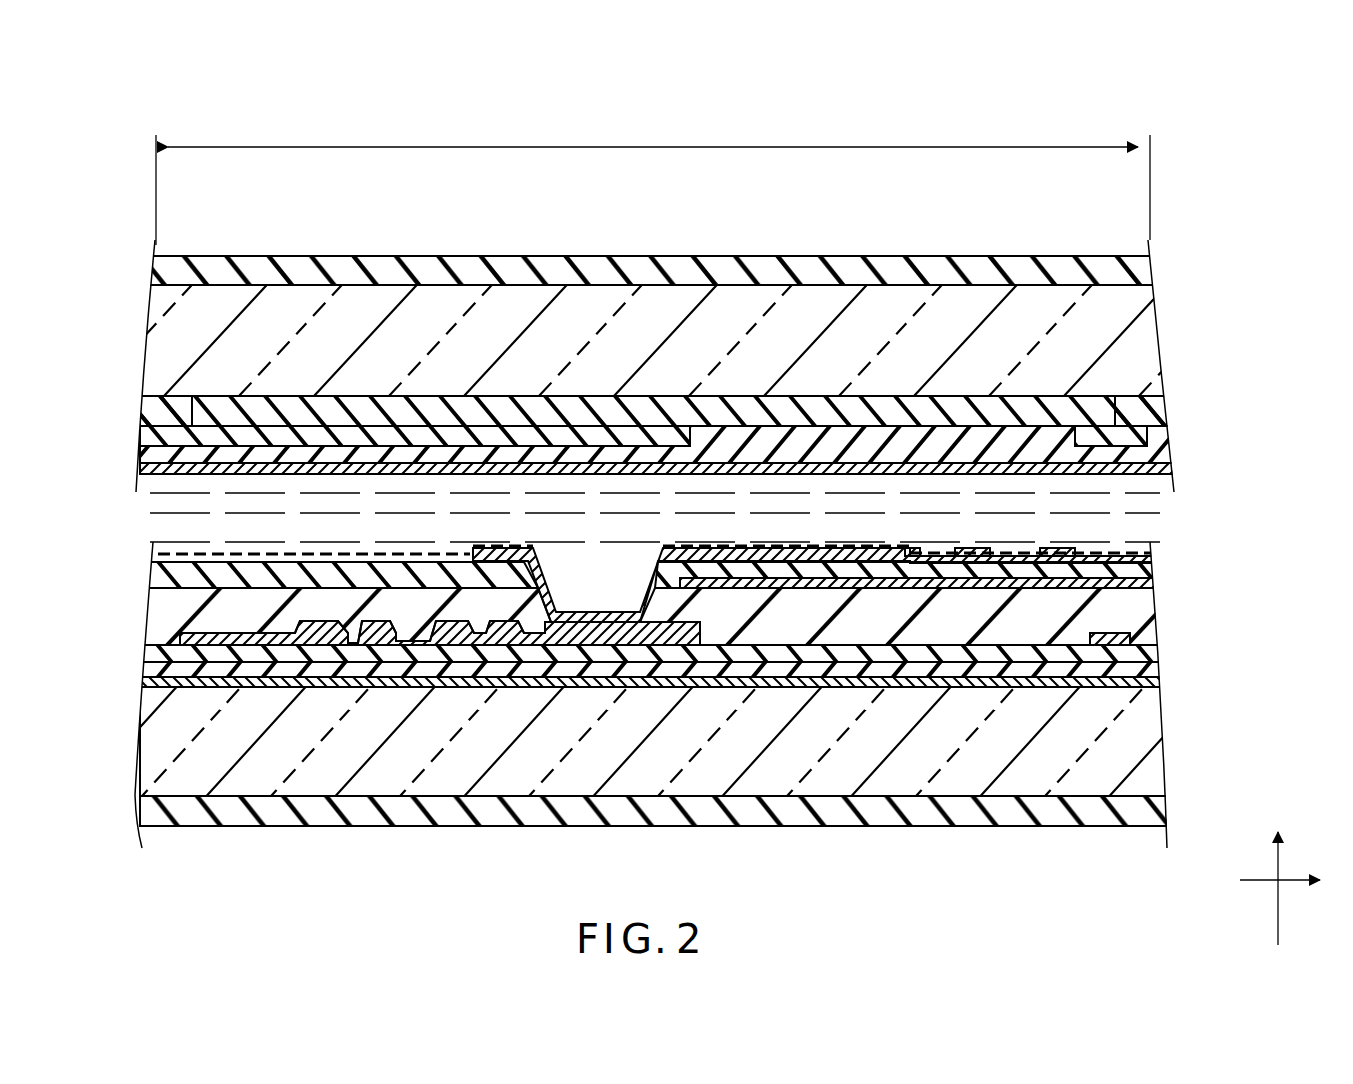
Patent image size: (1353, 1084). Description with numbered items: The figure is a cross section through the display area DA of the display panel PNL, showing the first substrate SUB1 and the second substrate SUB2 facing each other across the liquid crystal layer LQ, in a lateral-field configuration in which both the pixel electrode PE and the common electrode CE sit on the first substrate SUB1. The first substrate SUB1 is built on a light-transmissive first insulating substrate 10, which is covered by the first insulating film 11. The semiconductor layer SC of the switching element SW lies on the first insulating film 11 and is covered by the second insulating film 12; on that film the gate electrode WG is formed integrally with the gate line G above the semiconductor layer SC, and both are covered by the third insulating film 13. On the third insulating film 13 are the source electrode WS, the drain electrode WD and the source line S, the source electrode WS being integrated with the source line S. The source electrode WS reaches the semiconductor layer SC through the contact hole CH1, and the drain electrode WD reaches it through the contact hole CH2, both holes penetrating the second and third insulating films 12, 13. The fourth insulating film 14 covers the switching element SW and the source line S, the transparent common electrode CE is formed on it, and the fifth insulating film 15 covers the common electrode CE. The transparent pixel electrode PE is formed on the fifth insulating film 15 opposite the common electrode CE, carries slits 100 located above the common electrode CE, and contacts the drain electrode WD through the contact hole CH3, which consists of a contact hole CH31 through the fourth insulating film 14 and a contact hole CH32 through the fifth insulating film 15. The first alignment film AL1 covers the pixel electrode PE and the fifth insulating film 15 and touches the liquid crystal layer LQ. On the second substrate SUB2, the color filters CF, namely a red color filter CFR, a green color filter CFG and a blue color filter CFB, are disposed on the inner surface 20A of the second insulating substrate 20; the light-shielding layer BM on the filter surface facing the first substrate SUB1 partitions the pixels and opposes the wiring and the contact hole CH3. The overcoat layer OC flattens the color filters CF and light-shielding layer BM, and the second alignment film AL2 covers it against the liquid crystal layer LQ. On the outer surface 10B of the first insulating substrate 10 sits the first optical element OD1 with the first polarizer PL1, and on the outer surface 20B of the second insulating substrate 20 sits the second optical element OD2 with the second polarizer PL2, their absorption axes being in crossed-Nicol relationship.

The display panel PNL is at (1110, 116).
The display area DA is at (676, 146).
The first substrate SUB1 is at (1243, 558).
The second substrate SUB2 is at (1243, 243).
The first insulating substrate 10 is at (662, 741).
The outer surface of the first insulating substrate 10B is at (662, 741).
The first insulating film 11 is at (662, 674).
The second insulating film 12 is at (662, 653).
The third insulating film 13 is at (440, 633).
The fourth insulating film 14 is at (662, 616).
The fifth insulating film 15 is at (662, 575).
The second insulating substrate 20 is at (662, 340).
The inner surface of the second insulating substrate 20A is at (662, 340).
The outer surface of the second insulating substrate 20B is at (662, 340).
The first optical element OD1 is at (662, 811).
The first polarizer PL1 is at (662, 811).
The second optical element OD2 is at (692, 263).
The second polarizer PL2 is at (692, 263).
The color filters CF is at (662, 429).
The red color filter CFR is at (166, 411).
The green color filter CFG is at (662, 411).
The blue color filter CFB is at (1150, 411).
The light-shielding layer BM is at (643, 436).
The overcoat layer OC is at (662, 444).
The first alignment film AL1 is at (662, 550).
The second alignment film AL2 is at (662, 468).
The liquid crystal layer LQ is at (160, 512).
The pixel electrode PE is at (829, 585).
The common electrode CE is at (932, 583).
The slits 100 is at (990, 552).
The contact hole CH1 is at (440, 633).
The contact hole CH2 is at (440, 633).
The contact hole CH3 is at (829, 585).
The contact hole CH31 is at (829, 585).
The contact hole CH32 is at (829, 585).
The switching element SW is at (440, 633).
The semiconductor layer SC is at (440, 633).
The gate electrode WG is at (440, 633).
The gate line G is at (440, 633).
The source electrode WS is at (440, 633).
The drain electrode WD is at (440, 633).
The source line S is at (1110, 639).